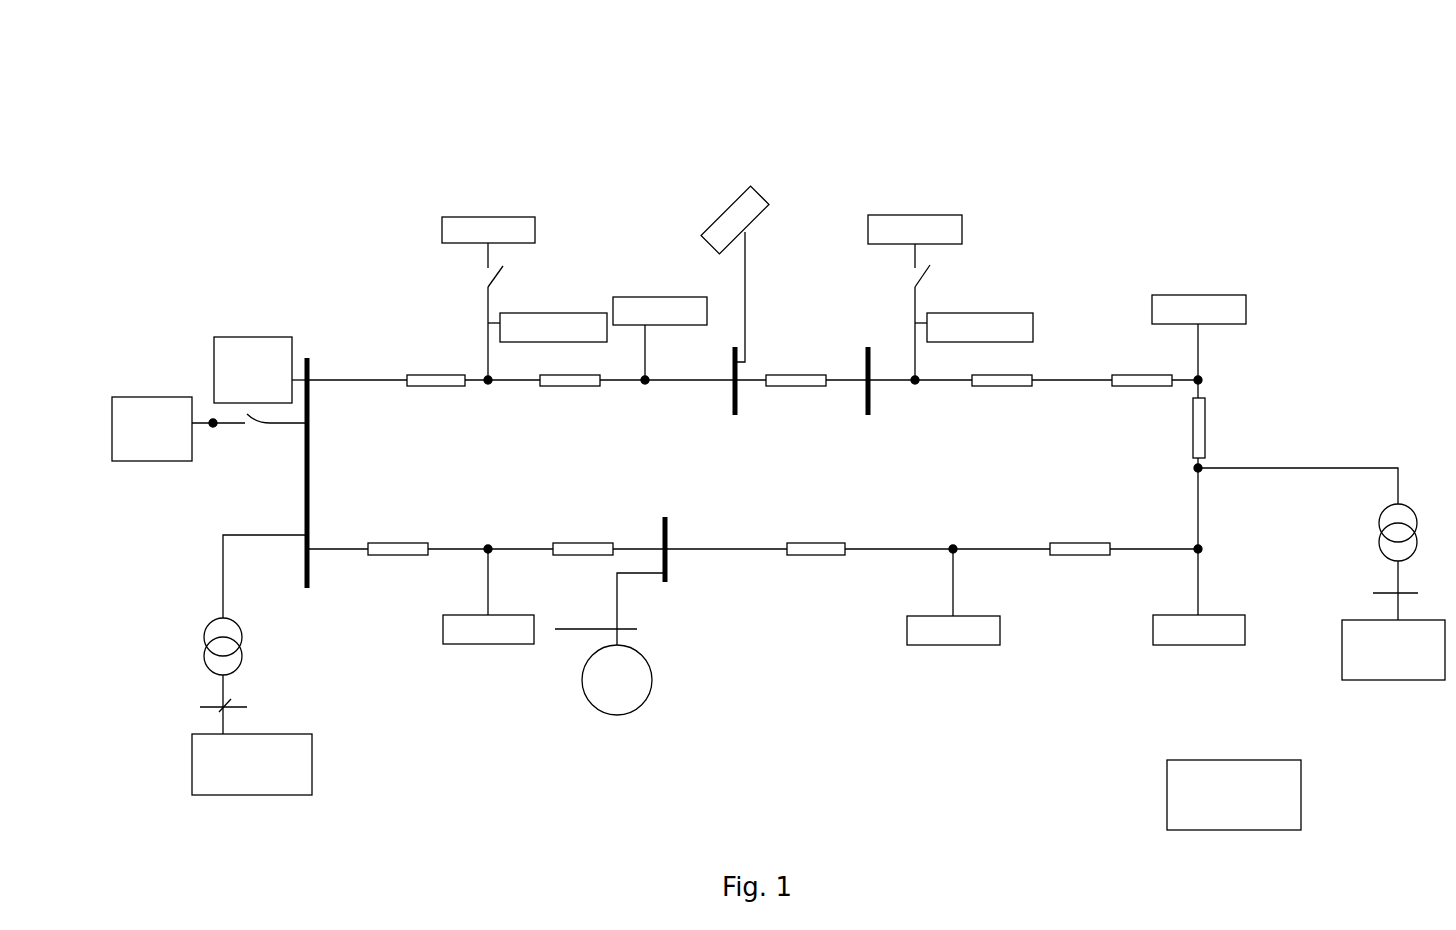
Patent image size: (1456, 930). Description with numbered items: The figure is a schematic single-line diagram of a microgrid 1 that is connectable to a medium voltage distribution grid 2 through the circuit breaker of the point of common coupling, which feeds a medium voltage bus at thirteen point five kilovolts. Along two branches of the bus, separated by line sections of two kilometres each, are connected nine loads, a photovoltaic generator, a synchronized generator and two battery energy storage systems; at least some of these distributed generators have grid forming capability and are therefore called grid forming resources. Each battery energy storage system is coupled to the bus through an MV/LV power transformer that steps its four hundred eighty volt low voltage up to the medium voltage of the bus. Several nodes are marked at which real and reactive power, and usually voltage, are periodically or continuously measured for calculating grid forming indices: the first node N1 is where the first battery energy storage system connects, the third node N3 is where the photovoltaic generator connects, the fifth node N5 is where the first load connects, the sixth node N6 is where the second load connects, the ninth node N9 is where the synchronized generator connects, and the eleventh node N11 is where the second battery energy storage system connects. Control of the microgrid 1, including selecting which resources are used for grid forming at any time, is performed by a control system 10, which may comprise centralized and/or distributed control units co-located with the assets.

The microgrid 1 is at (1061, 135).
The medium voltage distribution grid 2 is at (152, 445).
The control system 10 is at (1234, 795).
The first node N1 is at (233, 698).
The third node N3 is at (745, 303).
The fifth node N5 is at (488, 269).
The sixth node N6 is at (645, 359).
The ninth node N9 is at (587, 632).
The eleventh node N11 is at (1373, 593).